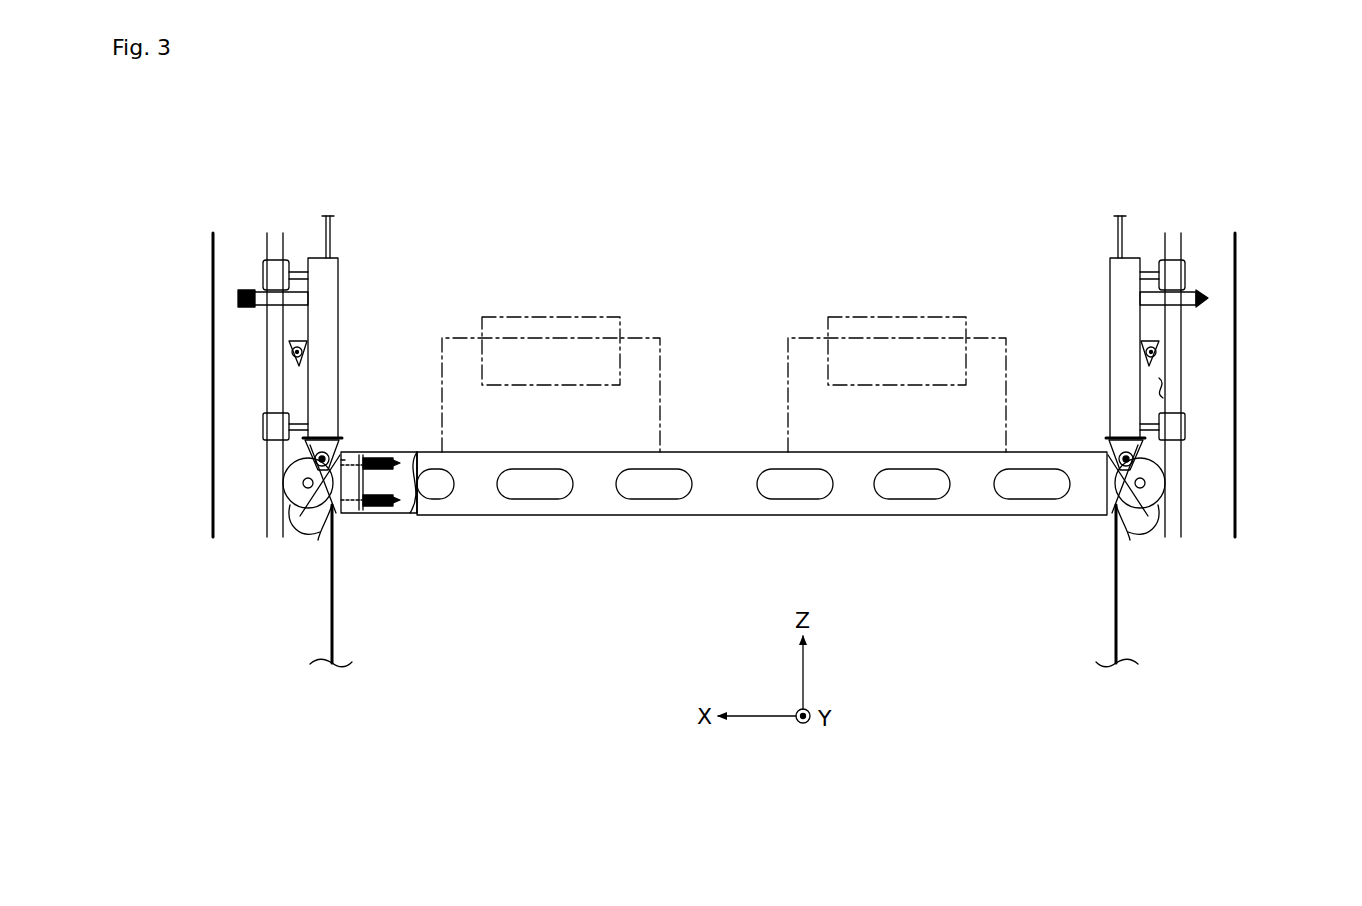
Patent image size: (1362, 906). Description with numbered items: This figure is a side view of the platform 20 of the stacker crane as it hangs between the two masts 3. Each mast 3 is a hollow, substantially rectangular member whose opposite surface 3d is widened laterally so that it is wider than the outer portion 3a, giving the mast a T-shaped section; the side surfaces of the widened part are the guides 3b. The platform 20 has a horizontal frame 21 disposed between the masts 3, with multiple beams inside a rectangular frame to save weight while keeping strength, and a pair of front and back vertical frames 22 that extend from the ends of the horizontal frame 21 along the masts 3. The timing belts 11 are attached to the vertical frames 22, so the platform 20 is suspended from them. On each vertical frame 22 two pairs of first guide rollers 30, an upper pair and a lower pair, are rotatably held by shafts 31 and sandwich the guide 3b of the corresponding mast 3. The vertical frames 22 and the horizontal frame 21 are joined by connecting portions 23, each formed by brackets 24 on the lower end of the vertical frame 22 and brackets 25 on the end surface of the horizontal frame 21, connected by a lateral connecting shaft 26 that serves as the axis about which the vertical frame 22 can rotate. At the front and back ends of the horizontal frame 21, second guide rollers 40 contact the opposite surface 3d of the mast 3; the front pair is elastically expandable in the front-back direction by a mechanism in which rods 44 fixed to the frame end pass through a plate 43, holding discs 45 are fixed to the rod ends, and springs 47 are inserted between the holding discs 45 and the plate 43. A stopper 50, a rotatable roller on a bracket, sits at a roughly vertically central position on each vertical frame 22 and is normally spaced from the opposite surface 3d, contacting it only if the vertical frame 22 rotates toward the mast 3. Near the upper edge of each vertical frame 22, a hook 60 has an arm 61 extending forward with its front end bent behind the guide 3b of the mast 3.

The mast 3 is at (208, 253).
The outer portion 3a is at (230, 316).
The guide 3b is at (283, 245).
The opposite surface 3d is at (290, 513).
The timing belt 11 is at (334, 226).
The platform 20 is at (667, 522).
The horizontal frame 21 is at (711, 518).
The vertical frame 22 is at (338, 290).
The connecting portion 23 is at (160, 455).
The bracket 24 is at (318, 448).
The bracket 25 is at (300, 508).
The connecting shaft 26 is at (310, 480).
The first guide roller 30 is at (265, 276).
The shaft 31 is at (296, 272).
The second guide roller 40 is at (318, 508).
The plate 43 is at (415, 520).
The rod 44 is at (346, 452).
The holding disc 45 is at (405, 452).
The spring 47 is at (375, 452).
The stopper 50 is at (282, 340).
The hook 60 is at (262, 305).
The arm 61 is at (240, 298).